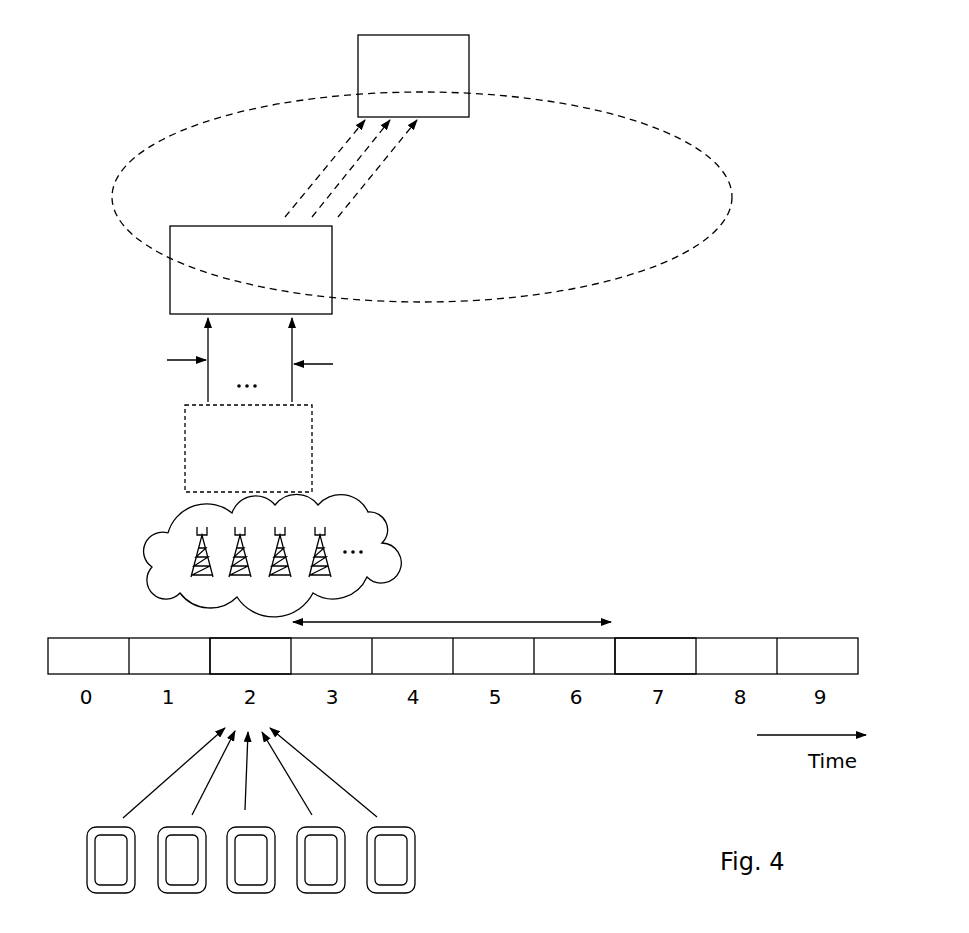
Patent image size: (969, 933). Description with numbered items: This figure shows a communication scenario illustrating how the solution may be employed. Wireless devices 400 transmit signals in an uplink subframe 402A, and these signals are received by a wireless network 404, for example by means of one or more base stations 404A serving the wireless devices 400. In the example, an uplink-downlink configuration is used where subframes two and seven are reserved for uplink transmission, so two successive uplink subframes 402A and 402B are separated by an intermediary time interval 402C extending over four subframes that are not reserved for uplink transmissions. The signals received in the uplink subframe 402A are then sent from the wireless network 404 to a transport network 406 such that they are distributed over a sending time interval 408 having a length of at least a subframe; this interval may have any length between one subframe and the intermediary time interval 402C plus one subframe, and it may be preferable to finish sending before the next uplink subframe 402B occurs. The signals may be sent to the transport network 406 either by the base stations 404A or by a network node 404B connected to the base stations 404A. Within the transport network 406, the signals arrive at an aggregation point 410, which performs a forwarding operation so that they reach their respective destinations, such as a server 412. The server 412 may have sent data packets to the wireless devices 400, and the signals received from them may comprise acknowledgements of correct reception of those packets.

The wireless devices 400 is at (444, 870).
The uplink subframe 402A is at (233, 638).
The uplink subframe 402B is at (655, 638).
The intermediary time interval 402C is at (495, 622).
The wireless network 404 is at (403, 528).
The base stations 404A is at (181, 552).
The network node 404B is at (312, 465).
The transport network 406 is at (632, 108).
The sending time interval 408 is at (326, 360).
The aggregation point 410 is at (170, 290).
The server 412 is at (358, 62).